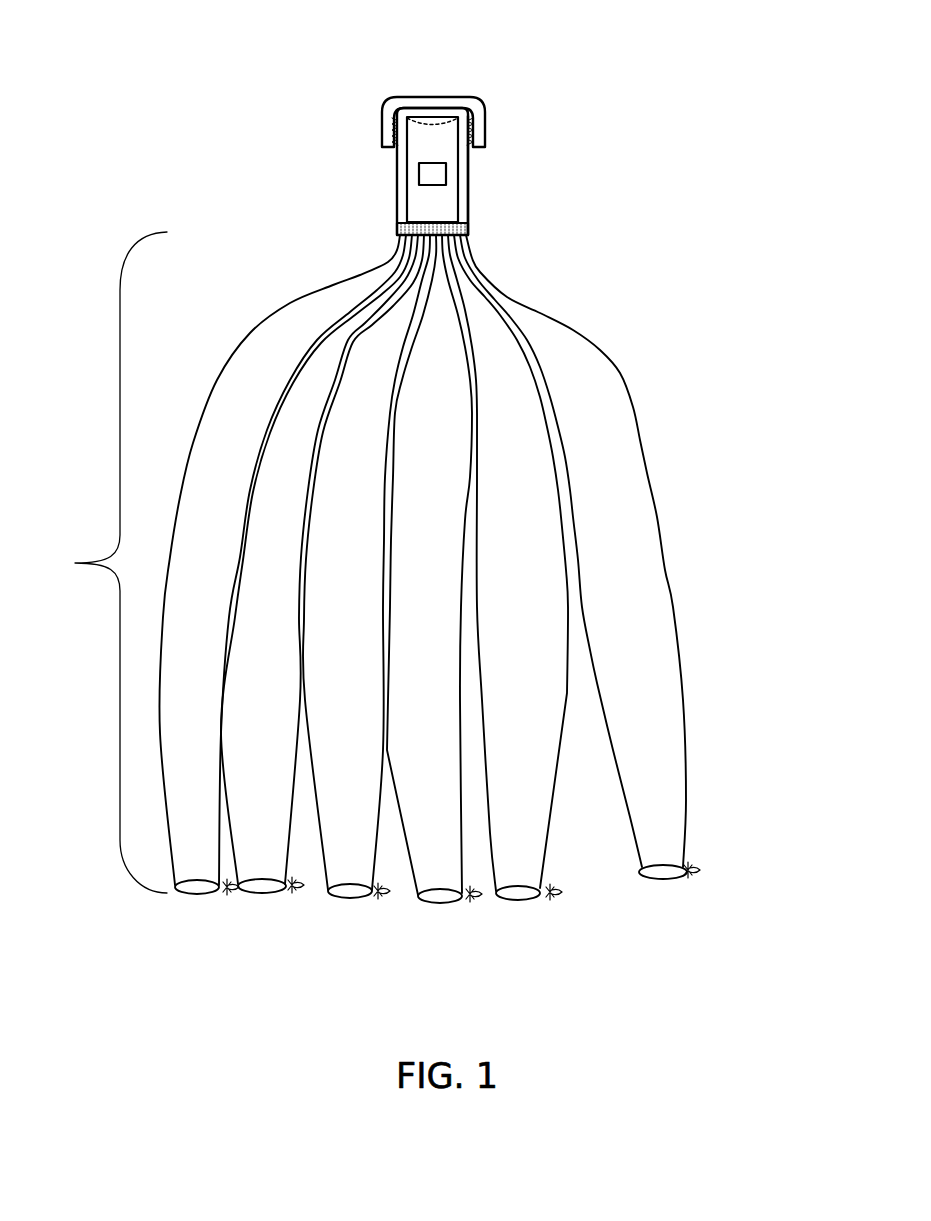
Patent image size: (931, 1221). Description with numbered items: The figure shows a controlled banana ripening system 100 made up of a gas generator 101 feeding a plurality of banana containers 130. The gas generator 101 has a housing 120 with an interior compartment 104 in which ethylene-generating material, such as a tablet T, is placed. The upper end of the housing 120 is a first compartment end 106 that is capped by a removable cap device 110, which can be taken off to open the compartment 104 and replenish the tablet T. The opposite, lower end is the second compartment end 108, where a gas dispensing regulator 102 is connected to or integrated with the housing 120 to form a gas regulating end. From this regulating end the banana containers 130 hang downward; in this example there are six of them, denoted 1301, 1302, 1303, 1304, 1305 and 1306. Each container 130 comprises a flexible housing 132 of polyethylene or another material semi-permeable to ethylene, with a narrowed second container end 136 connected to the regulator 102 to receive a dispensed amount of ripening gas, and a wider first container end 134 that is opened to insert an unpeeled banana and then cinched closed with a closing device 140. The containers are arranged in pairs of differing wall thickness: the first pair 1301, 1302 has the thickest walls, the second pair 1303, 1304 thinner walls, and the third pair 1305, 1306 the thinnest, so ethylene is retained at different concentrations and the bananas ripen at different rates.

The system 100 is at (364, 91).
The gas generator 101 is at (350, 126).
The gas dispensing regulator 102 is at (397, 230).
The interior compartment 104 is at (416, 197).
The first compartment end 106 is at (431, 116).
The second compartment end 108 is at (420, 222).
The removable cap device 110 is at (487, 128).
The tablet T is at (441, 173).
The housing 120 is at (470, 203).
The banana containers 130 is at (99, 562).
The first banana container 1301 is at (272, 330).
The second banana container 1302 is at (262, 888).
The third banana container 1303 is at (350, 893).
The fourth banana container 1304 is at (441, 898).
The fifth banana container 1305 is at (520, 896).
The sixth banana container 1306 is at (623, 596).
The housing 132 is at (610, 460).
The first container end 134 is at (665, 874).
The second container end 136 is at (470, 258).
The closing device 140 is at (697, 867).